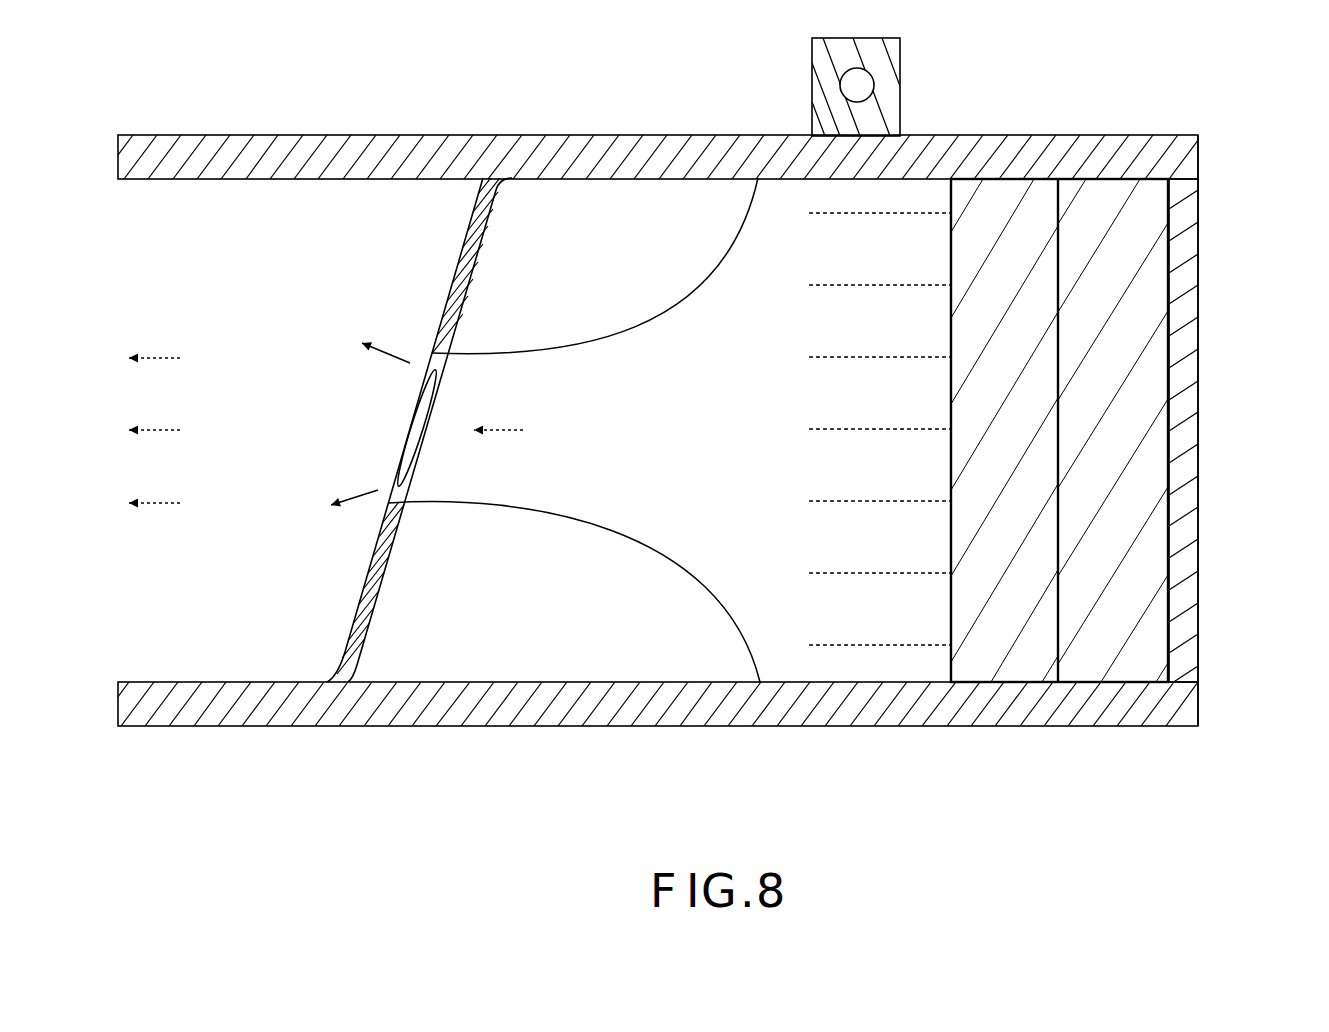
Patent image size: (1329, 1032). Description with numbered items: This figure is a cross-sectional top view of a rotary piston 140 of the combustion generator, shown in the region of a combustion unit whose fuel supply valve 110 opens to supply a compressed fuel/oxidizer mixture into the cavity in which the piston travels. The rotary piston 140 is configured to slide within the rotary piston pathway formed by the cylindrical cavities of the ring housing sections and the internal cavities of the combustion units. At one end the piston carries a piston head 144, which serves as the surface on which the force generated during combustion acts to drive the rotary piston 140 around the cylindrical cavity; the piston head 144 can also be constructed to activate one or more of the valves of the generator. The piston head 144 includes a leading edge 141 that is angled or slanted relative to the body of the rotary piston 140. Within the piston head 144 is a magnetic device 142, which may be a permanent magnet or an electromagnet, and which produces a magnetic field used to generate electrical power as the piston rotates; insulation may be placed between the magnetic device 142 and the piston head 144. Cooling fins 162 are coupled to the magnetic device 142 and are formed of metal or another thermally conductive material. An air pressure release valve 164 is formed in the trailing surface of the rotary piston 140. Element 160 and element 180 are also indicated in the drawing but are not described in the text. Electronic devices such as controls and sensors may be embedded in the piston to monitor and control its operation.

The fuel supply valve 110 is at (797, 84).
The rotary piston 140 is at (1200, 134).
The leading edge 141 is at (447, 224).
The magnetic device 142 is at (1010, 172).
The piston head 144 is at (1214, 236).
The filter 160 is at (1108, 196).
The cooling fins 162 is at (901, 652).
The air pressure release valve 164 is at (444, 399).
The lower flap portion 180 is at (392, 656).